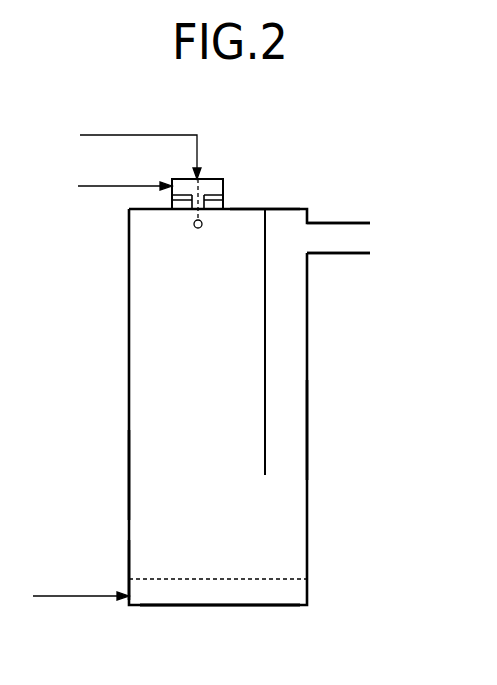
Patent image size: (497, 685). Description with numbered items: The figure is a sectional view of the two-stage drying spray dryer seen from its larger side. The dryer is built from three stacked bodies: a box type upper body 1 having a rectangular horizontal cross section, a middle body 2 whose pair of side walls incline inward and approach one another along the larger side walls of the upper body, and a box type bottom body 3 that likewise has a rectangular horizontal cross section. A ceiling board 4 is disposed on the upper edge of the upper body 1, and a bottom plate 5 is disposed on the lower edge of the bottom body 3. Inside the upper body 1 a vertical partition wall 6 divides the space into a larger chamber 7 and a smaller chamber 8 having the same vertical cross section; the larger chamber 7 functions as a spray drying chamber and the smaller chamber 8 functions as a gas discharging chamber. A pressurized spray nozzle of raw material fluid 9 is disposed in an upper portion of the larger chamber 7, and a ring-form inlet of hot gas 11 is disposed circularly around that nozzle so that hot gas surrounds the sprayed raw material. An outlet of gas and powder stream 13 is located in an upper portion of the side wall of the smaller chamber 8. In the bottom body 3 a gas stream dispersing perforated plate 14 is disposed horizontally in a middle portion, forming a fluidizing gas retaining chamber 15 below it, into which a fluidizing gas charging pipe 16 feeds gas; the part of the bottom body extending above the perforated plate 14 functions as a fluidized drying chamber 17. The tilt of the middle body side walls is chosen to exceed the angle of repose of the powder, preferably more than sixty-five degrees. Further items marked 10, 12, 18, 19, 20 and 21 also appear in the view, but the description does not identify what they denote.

The upper body 1 is at (129, 347).
The middle body 2 is at (129, 470).
The bottom body 3 is at (129, 565).
The ceiling board 4 is at (250, 207).
The bottom plate 5 is at (237, 607).
The vertical partition wall 6 is at (265, 359).
The larger chamber 7 is at (203, 390).
The smaller chamber 8 is at (285, 433).
The pressurized spray nozzle of raw material fluid 9 is at (196, 228).
The gas supply line 10 is at (138, 134).
The ring-form inlet of hot gas 11 is at (172, 197).
The liquid supply line 12 is at (137, 183).
The outlet of gas and powder stream 13 is at (325, 222).
The gas stream dispersing perforated plate 14 is at (200, 579).
The fluidizing gas retaining chamber 15 is at (183, 594).
The fluidizing gas charging pipe 16 is at (93, 600).
The fluidized drying chamber 17 is at (172, 570).
The upper layer 18 is at (256, 575).
The lower layer 19 is at (256, 603).
The nozzle housing 20 is at (223, 198).
The nozzle insert 21 is at (215, 190).